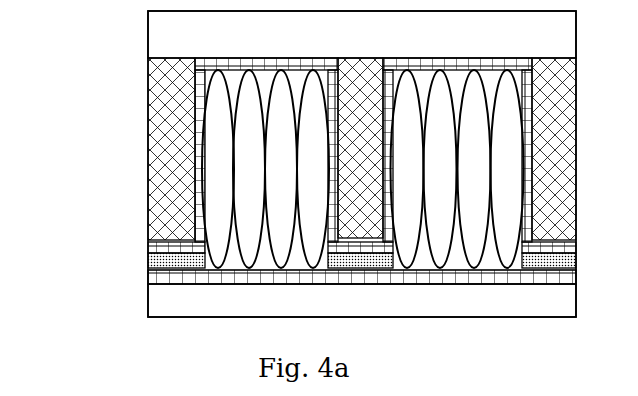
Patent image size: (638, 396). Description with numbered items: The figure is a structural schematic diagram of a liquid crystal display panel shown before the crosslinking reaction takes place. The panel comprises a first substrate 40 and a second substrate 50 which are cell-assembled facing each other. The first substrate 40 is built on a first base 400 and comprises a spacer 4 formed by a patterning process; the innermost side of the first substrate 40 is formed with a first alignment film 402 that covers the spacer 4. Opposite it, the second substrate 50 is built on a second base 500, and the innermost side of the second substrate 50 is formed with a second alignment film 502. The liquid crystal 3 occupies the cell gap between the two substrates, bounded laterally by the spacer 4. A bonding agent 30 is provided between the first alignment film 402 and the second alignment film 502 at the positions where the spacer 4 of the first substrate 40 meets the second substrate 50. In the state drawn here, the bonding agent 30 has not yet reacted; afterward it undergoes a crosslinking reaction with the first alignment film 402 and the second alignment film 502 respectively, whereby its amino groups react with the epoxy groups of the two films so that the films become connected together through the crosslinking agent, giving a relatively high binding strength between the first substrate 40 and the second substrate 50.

The first substrate 40 is at (82, 30).
The first base 400 is at (173, 33).
The spacer 4 is at (172, 81).
The first alignment film 402 is at (198, 115).
The liquid crystal 3 is at (215, 160).
The bonding agent 30 is at (148, 257).
The second substrate 50 is at (78, 270).
The second alignment film 502 is at (148, 273).
The second base 500 is at (166, 308).